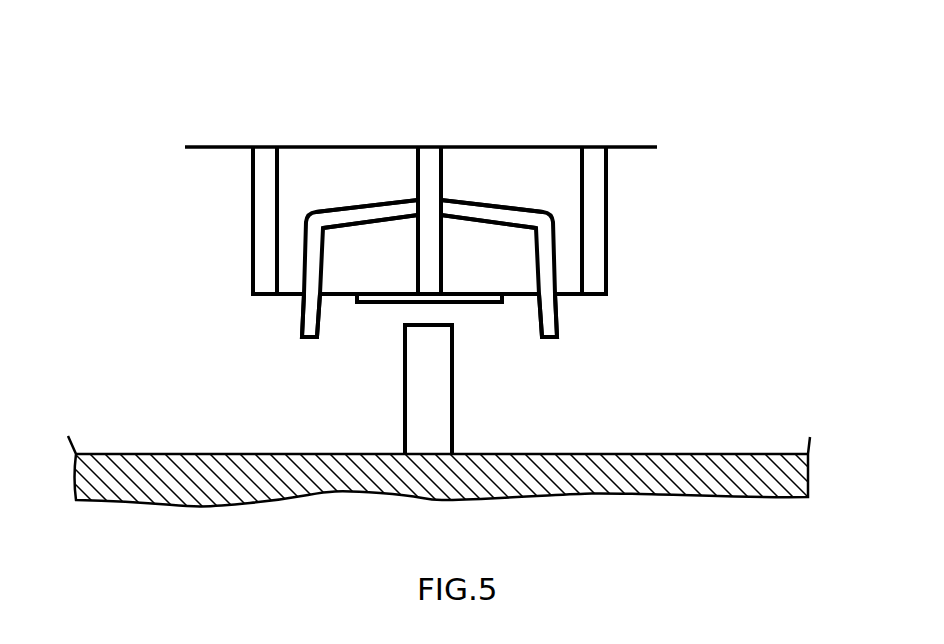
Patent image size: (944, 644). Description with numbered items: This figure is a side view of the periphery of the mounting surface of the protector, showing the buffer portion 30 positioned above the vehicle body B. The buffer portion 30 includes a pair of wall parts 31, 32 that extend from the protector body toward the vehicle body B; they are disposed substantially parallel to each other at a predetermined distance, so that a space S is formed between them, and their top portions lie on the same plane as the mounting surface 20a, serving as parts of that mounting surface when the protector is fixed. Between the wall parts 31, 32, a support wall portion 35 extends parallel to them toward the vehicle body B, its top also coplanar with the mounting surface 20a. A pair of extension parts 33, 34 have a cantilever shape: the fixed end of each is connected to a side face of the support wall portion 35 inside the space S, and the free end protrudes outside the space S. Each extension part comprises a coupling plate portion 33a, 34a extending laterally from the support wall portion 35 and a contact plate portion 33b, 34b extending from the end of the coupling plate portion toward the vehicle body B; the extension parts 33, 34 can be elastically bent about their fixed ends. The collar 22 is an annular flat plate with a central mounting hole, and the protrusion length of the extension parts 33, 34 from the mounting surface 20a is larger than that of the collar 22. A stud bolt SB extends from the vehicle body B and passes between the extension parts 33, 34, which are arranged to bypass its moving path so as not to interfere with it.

The buffer portion 30 is at (220, 248).
The wall part 31 is at (252, 200).
The wall part 32 is at (608, 213).
The extension part 33 is at (315, 212).
The coupling plate portion 33a is at (357, 208).
The contact plate portion 33b is at (300, 310).
The extension part 34 is at (538, 212).
The coupling plate portion 34a is at (493, 202).
The contact plate portion 34b is at (557, 320).
The support wall portion 35 is at (415, 173).
The space S is at (567, 192).
The collar 22 is at (477, 302).
The mounting surface 20a is at (338, 302).
The stud bolt SB is at (453, 393).
The vehicle body B is at (730, 454).